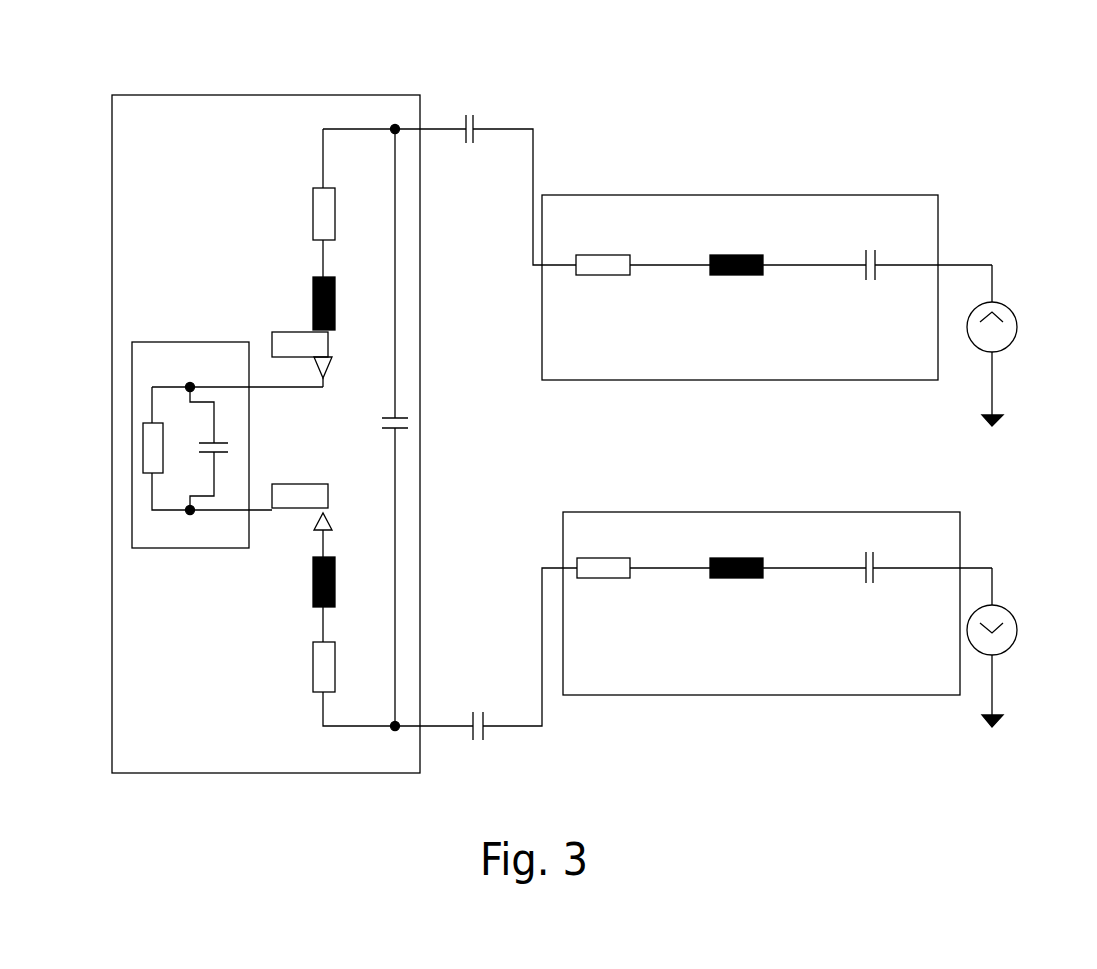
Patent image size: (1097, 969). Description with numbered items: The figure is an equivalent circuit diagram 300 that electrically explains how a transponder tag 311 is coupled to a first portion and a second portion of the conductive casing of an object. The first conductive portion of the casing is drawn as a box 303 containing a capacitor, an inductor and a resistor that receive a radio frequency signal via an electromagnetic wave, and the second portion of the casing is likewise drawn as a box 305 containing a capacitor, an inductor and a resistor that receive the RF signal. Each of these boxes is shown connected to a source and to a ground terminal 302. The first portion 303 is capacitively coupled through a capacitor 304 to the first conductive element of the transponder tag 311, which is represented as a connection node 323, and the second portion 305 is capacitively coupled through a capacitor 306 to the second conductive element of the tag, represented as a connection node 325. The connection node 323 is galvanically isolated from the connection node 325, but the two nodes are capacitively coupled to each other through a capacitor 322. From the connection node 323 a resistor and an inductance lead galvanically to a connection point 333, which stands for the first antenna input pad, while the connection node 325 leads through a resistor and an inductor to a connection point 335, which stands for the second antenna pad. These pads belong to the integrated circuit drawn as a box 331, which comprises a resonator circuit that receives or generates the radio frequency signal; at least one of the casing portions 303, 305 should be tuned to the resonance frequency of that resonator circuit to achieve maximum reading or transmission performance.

The equivalent circuit diagram 300 is at (1003, 153).
The ground terminal 302 is at (992, 433).
The box representing first conductive portion 303 is at (742, 695).
The capacitor 304 is at (486, 736).
The box representing second conductive portion 305 is at (712, 195).
The capacitor 306 is at (480, 118).
The transponder tag 311 is at (162, 773).
The capacitor 322 is at (405, 412).
The connection node 323 is at (395, 730).
The connection node 325 is at (395, 124).
The box representing integrated circuit 331 is at (215, 548).
The connection point 333 is at (295, 485).
The connection point 335 is at (320, 347).